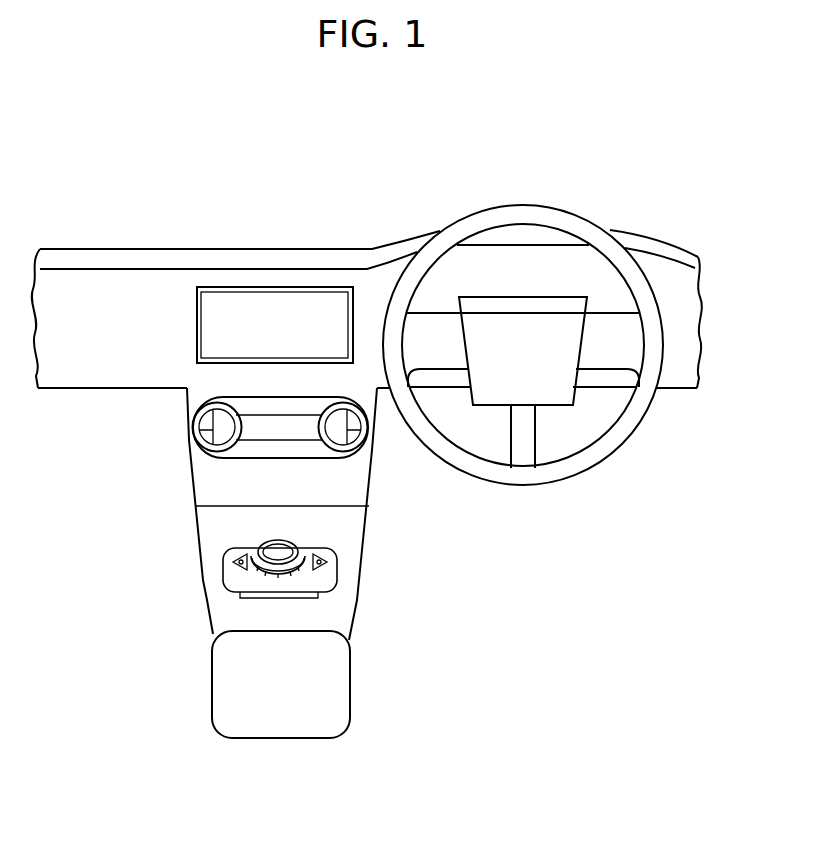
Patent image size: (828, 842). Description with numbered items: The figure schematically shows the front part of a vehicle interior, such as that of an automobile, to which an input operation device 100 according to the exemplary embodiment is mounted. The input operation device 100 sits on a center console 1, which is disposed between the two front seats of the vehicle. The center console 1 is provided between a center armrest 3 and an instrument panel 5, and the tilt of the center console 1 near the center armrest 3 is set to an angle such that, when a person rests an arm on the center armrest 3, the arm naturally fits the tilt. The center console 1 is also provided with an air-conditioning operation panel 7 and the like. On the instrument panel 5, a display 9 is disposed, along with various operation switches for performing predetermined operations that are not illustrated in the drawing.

The center console 1 is at (338, 485).
The center armrest 3 is at (328, 702).
The instrument panel 5 is at (115, 297).
The air-conditioning operation panel 7 is at (208, 433).
The display 9 is at (243, 312).
The input operation device 100 is at (250, 584).